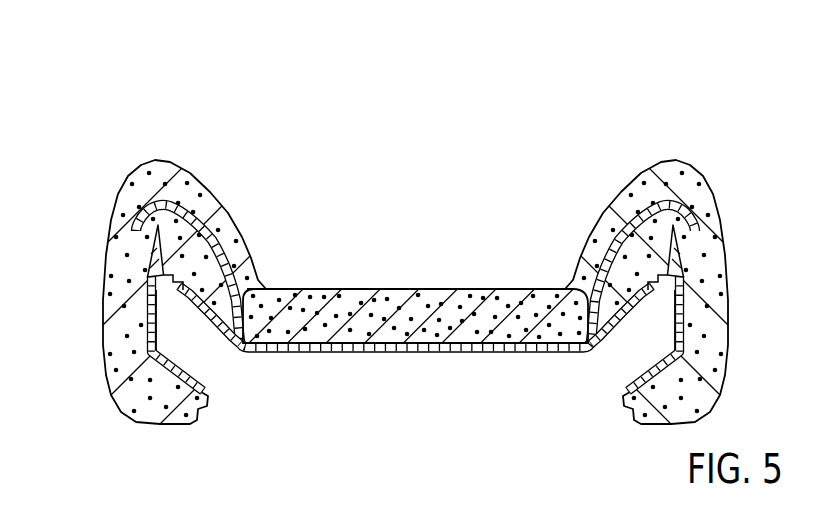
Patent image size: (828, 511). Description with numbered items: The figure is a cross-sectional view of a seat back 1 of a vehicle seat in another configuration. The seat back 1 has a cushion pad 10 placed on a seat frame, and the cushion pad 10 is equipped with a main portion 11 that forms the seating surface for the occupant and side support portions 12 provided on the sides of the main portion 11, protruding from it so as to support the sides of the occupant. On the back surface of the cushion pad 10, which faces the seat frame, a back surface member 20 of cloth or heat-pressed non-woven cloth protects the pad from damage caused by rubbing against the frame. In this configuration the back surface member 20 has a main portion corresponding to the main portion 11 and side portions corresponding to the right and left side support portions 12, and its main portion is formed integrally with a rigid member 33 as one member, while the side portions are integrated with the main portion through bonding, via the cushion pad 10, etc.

The seat back 1 is at (285, 132).
The cushion pad 10 is at (328, 292).
The main portion 11 is at (558, 262).
The side support portions 12 is at (279, 268).
The back surface member 20 is at (157, 330).
The rigid member 33 is at (196, 243).